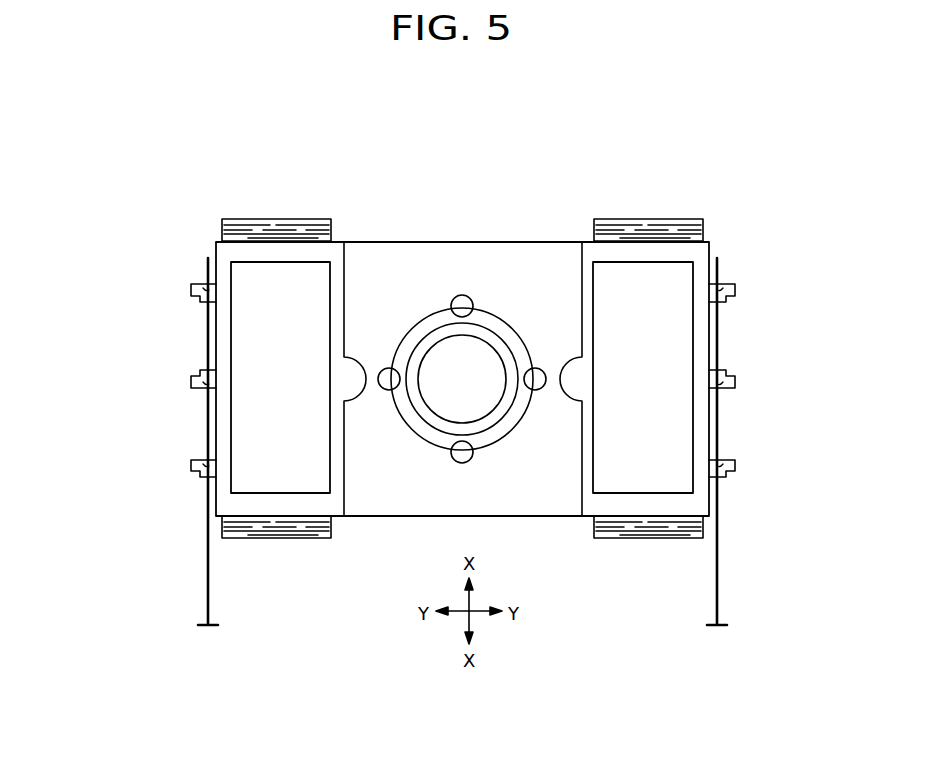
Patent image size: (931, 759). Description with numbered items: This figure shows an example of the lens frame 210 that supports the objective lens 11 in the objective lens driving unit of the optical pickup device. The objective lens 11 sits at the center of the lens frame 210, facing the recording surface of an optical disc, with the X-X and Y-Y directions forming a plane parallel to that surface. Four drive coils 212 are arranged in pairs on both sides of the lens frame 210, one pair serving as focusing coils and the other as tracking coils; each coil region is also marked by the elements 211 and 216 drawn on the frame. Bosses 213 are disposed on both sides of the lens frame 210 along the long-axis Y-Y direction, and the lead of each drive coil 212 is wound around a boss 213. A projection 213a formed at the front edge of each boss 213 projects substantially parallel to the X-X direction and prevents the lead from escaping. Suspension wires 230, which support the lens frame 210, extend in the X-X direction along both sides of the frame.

The objective lens 11 is at (485, 350).
The lens frame 210 is at (725, 182).
The coil 211 is at (298, 395).
The drive coil 212 is at (223, 230).
The boss 213 is at (191, 294).
The projection 213a is at (196, 303).
The magnet yoke 216 is at (275, 219).
The suspension wire 230 is at (208, 573).